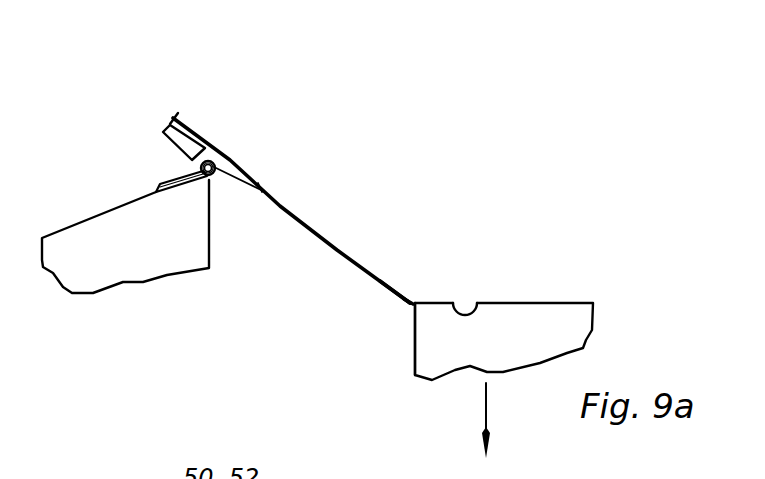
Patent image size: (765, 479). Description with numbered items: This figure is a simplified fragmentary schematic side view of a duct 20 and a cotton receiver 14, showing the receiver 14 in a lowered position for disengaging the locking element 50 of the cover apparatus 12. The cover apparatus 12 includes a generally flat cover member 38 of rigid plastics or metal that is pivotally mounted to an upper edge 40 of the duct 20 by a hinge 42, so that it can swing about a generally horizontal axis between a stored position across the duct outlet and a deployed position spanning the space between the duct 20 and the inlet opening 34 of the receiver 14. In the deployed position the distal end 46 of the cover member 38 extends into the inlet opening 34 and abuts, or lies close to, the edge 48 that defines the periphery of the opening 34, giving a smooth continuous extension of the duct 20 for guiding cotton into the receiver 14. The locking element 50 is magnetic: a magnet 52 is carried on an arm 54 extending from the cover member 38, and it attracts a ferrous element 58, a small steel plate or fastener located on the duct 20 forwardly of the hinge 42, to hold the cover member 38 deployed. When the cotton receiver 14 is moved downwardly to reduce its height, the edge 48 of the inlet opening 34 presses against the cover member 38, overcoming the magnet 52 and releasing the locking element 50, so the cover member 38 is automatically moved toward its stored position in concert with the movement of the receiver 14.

The cover apparatus 12 is at (327, 235).
The cotton receiver 14 is at (584, 299).
The duct 20 is at (70, 221).
The inlet opening 34 is at (415, 338).
The cover member 38 is at (388, 283).
The upper edge 40 is at (212, 180).
The hinge 42 is at (200, 169).
The distal end 46 is at (402, 307).
The edge 48 is at (480, 310).
The locking element 50 is at (174, 137).
The magnet 52 is at (238, 179).
The arm 54 is at (172, 119).
The ferrous element 58 is at (157, 185).